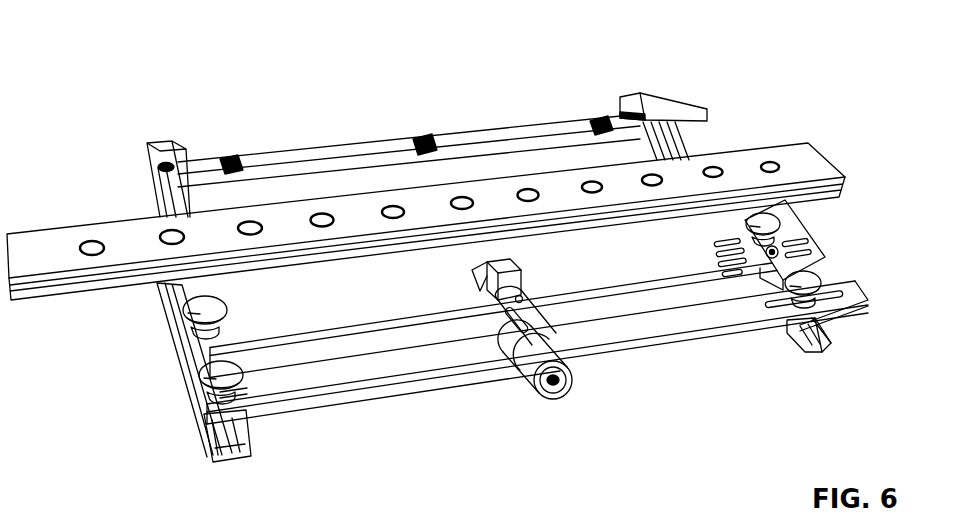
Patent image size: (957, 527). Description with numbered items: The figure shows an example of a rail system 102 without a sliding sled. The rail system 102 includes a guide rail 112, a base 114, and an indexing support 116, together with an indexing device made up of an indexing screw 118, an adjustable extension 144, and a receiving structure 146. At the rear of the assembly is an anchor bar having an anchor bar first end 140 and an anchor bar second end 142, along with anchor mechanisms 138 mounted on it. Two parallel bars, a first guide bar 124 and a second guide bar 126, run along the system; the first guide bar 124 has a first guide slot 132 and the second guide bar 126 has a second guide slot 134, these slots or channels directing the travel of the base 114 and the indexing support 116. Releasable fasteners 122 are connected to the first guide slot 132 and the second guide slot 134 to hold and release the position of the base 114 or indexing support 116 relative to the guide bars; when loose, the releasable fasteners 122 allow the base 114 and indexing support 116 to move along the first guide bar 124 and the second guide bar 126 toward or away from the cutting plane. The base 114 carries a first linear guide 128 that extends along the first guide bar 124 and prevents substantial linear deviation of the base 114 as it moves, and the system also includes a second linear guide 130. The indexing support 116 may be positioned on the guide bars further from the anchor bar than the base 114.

The rail system 102 is at (563, 90).
The guide rail 112 is at (42, 253).
The base 114 is at (733, 215).
The indexing support 116 is at (468, 355).
The indexing screw 118 is at (527, 373).
The releasable fasteners 122 is at (187, 345).
The first guide bar 124 is at (208, 437).
The second guide bar 126 is at (787, 333).
The first linear guide 128 is at (176, 298).
The second linear guide 130 is at (333, 150).
The first guide slot 132 is at (247, 420).
The second guide slot 134 is at (842, 340).
The anchor mechanisms 138 is at (228, 158).
The anchor bar first end 140 is at (147, 170).
The anchor bar second end 142 is at (688, 116).
The adjustable extension 144 is at (540, 300).
The receiving structure 146 is at (477, 302).